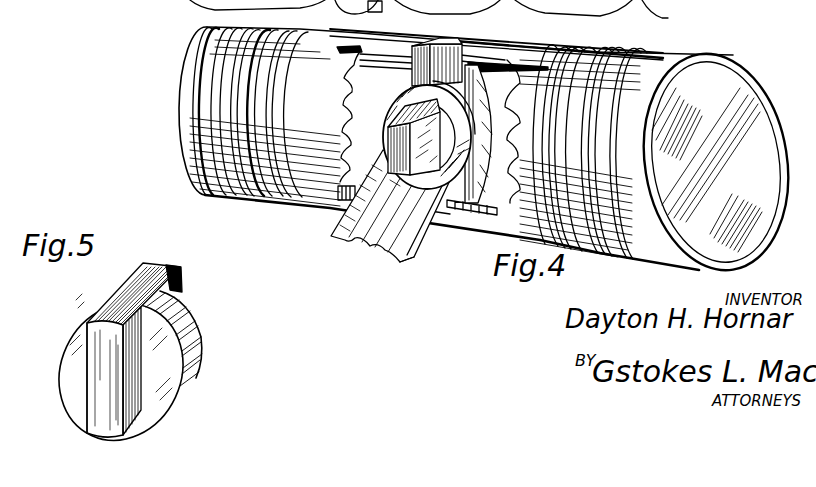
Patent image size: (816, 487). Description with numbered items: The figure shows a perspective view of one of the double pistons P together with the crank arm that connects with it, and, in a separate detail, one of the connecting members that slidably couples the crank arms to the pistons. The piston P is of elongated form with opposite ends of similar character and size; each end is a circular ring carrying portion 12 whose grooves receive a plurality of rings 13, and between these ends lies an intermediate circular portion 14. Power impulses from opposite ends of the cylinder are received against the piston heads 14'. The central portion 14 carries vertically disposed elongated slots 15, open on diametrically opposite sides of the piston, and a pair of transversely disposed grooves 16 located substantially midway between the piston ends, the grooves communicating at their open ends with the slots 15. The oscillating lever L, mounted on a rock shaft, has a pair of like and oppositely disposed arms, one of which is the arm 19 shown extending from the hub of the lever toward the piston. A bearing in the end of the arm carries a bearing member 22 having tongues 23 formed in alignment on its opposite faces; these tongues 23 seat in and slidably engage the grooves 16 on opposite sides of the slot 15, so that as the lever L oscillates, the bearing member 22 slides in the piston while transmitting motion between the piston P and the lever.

In FIG. 4, the circular ring carrying portion 12 is at (220, 34).
In FIG. 4, the rings 13 is at (226, 107).
In FIG. 4, the intermediate circular portion 14 is at (425, 119).
In FIG. 4, the piston heads 14' is at (707, 170).
In FIG. 4, the elongated slots 15 is at (398, 53).
In FIG. 4, the transversely disposed grooves 16 is at (453, 43).
In FIG. 4, the lever arm 19 is at (410, 227).
In FIG. 4, the bearing member 22 is at (404, 97).
In FIG. 5, the bearing member 22 is at (183, 323).
In FIG. 4, the tongues 23 is at (397, 123).
In FIG. 5, the tongues 23 is at (181, 284).
In FIG. 4, the piston P is at (182, 77).
In FIG. 4, the oscillating lever L is at (424, 258).